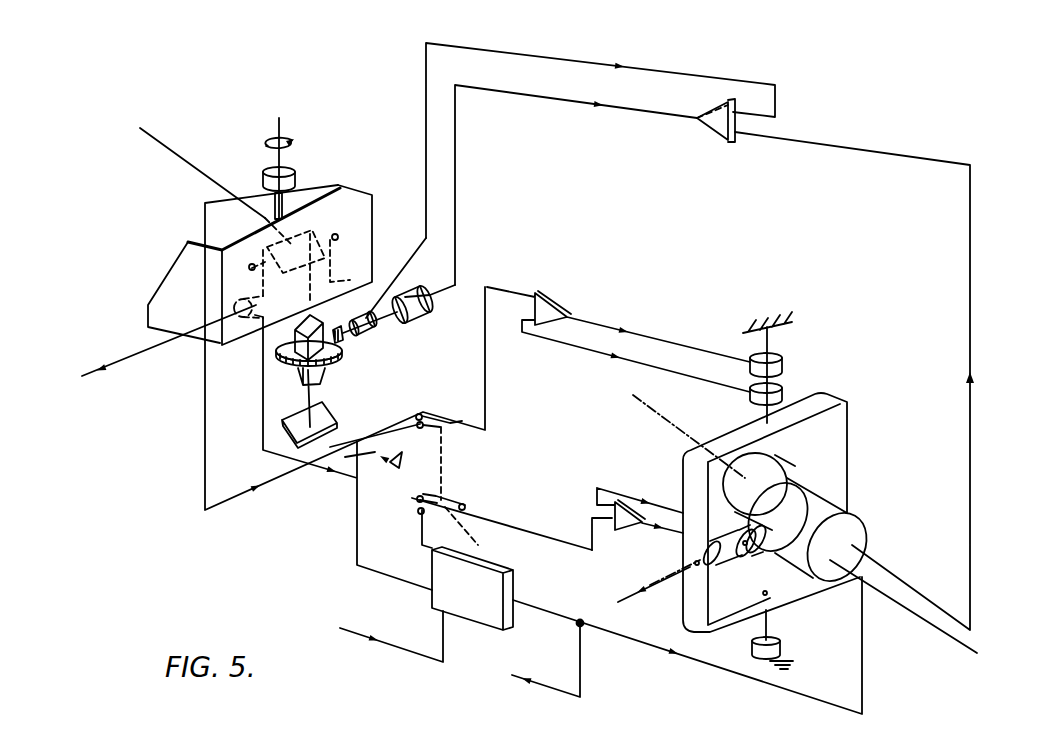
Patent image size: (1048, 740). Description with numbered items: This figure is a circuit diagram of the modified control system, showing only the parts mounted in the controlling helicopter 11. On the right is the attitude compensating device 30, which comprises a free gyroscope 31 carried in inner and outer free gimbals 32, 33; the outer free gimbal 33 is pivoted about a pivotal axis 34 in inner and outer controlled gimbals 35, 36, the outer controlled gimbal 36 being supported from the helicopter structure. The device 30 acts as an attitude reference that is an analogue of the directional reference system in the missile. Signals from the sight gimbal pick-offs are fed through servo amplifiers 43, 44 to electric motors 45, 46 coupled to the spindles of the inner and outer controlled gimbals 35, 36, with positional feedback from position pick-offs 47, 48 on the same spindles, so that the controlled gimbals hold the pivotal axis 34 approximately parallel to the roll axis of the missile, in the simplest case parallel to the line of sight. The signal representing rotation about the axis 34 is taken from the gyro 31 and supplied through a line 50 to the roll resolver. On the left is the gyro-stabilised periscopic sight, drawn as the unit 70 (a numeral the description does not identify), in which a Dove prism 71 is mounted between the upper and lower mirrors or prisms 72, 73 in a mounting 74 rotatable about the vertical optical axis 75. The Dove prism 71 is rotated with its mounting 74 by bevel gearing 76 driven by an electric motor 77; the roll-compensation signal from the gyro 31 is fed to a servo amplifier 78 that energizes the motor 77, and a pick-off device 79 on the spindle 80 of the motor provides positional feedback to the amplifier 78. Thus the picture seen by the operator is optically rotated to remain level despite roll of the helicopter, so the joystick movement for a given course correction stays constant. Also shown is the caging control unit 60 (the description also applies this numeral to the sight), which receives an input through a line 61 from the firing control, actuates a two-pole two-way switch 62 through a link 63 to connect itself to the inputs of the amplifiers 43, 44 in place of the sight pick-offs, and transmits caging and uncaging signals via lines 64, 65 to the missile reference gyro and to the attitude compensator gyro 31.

The helicopter 11 is at (781, 646).
The attitude compensating device 30 is at (827, 511).
The free gyroscope 31 is at (854, 531).
The inner free gimbal 32 is at (854, 531).
The outer free gimbal 33 is at (857, 532).
The pivotal axis 34 is at (912, 605).
The inner controlled gimbal 35 is at (788, 490).
The outer controlled gimbal 36 is at (845, 418).
The servo amplifier 43 is at (621, 530).
The servo amplifier 44 is at (556, 310).
The electric motor 45 is at (718, 562).
The electric motor 46 is at (784, 366).
The electrical position pick-off 47 is at (750, 557).
The electrical position pick-off 48 is at (785, 393).
The line 50 is at (972, 440).
The caging control unit 60 is at (505, 626).
The line 61 is at (403, 650).
The two-pole, two-way switch 62 is at (445, 458).
The link 63 is at (478, 560).
The line 64 is at (580, 697).
The line 65 is at (607, 633).
The oscillator housing 70 is at (182, 277).
The Dove prism assembly 71 is at (303, 326).
The upper mirror or prism 72 is at (338, 236).
The lower mirror or prism 73 is at (330, 420).
The mounting 74 is at (278, 352).
The vertical optical axis 75 is at (325, 283).
The bevel gearing 76 is at (345, 340).
The electric motor 77 is at (425, 311).
The servo amplifier 78 is at (712, 128).
The pick-off device 79 is at (373, 330).
The spindle 80 is at (400, 297).